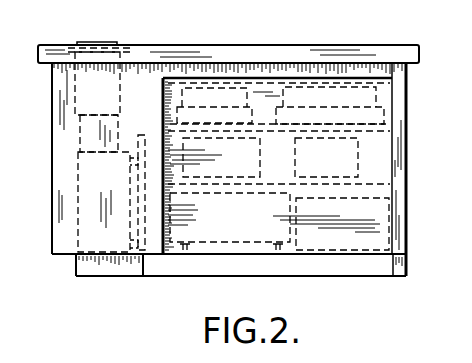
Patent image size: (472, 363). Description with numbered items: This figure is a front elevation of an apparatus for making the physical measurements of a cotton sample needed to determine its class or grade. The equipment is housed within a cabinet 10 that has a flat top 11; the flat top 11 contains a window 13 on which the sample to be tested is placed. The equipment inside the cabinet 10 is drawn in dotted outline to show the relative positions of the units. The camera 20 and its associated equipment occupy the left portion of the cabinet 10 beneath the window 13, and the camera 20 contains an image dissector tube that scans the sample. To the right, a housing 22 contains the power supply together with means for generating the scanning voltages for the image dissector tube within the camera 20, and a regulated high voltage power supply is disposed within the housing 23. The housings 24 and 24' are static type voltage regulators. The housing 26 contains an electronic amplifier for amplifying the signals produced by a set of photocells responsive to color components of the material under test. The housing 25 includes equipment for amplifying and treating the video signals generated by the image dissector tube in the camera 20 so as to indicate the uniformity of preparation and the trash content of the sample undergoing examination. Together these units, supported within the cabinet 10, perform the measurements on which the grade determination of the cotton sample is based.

The cabinet 10 is at (412, 140).
The flat top 11 is at (228, 41).
The window 13 is at (99, 85).
The camera 20 is at (76, 163).
The housing 22 is at (218, 227).
The housing 23 is at (334, 238).
The housing 24 is at (226, 157).
The housing 24' is at (371, 162).
The housing 25 is at (336, 97).
The housing 26 is at (193, 98).